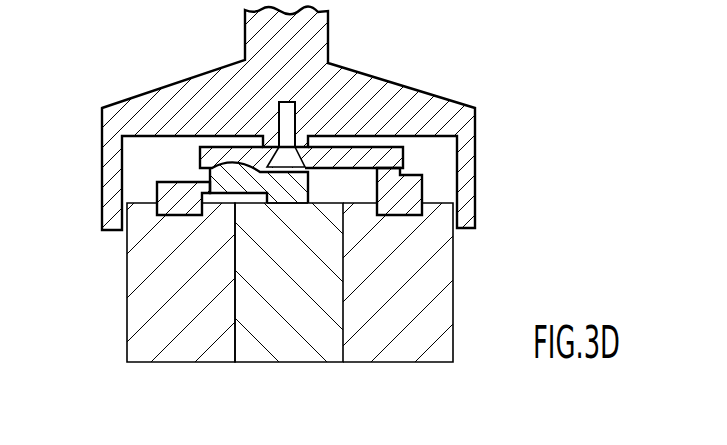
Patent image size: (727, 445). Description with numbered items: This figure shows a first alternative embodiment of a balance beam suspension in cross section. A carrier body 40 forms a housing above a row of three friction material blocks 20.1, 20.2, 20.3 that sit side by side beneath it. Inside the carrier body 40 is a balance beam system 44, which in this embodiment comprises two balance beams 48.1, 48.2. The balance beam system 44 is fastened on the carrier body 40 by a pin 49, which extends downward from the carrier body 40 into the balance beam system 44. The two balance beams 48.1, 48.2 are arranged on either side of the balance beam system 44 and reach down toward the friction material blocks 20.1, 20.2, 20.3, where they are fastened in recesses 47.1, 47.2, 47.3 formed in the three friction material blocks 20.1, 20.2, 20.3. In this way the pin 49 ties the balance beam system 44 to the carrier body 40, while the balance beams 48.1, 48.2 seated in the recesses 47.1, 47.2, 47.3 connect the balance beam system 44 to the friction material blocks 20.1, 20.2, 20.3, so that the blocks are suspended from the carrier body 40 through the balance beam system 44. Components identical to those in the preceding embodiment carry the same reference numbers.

The carrier body 40 is at (422, 115).
The balance beam system 44 is at (352, 147).
The pin 49 is at (283, 122).
The balance beam 48.1 is at (180, 194).
The balance beam 48.2 is at (404, 190).
The recess 47.1 is at (181, 216).
The recess 47.2 is at (285, 216).
The recess 47.3 is at (402, 216).
The friction material block 20.1 is at (159, 340).
The friction material block 20.2 is at (322, 342).
The friction material block 20.3 is at (435, 350).